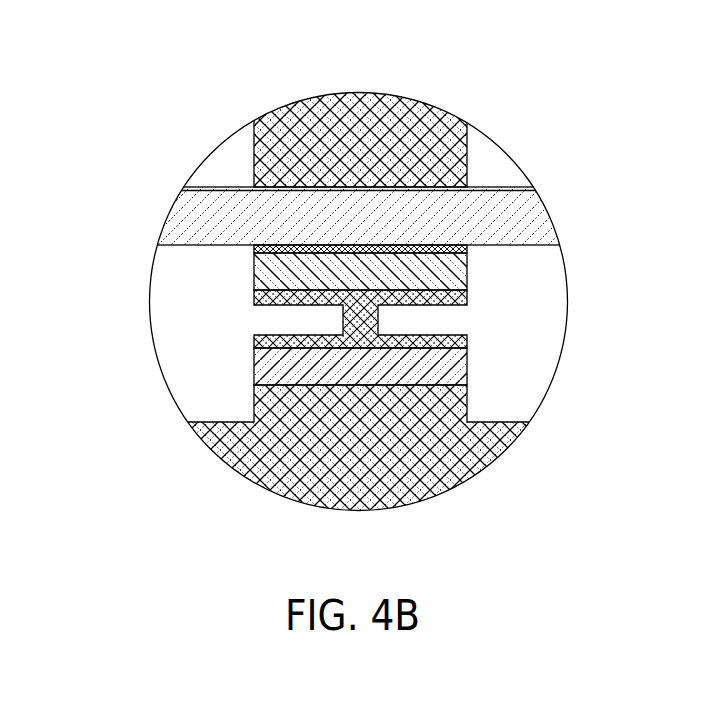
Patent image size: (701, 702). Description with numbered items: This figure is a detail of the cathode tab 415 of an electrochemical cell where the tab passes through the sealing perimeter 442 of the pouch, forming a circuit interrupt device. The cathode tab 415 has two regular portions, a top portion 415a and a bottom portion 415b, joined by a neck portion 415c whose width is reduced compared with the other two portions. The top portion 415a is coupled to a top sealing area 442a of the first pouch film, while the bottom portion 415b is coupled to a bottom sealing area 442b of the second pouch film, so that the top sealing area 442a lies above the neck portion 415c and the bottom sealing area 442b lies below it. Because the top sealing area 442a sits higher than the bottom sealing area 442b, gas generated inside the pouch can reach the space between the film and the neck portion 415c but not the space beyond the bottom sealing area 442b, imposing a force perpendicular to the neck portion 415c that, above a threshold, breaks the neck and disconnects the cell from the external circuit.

The cathode tab 415 is at (254, 141).
The sealing perimeter 442 is at (218, 187).
The top sealing area 442a is at (254, 268).
The bottom sealing area 442b is at (467, 358).
The top portion 415a is at (340, 307).
The bottom portion 415b is at (254, 404).
The neck portion 415c is at (420, 322).